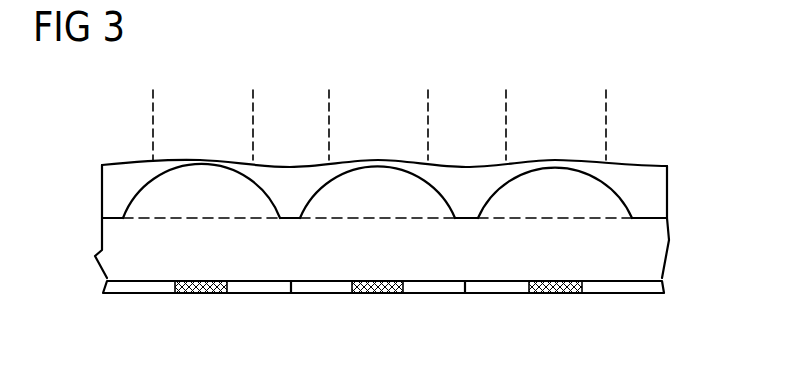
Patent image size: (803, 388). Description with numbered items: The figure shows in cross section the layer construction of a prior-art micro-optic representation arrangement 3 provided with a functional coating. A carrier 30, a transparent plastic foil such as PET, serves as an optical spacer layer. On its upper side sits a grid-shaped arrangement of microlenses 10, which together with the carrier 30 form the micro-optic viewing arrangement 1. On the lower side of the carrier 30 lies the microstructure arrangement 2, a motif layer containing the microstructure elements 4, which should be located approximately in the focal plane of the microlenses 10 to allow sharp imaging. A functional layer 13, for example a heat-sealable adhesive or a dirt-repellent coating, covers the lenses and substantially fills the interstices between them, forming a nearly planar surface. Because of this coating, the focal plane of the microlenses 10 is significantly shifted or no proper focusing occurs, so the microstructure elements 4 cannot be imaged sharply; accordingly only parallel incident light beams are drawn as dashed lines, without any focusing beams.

The micro-optic representation arrangement 3 is at (82, 118).
The micro-optic viewing arrangement 1 is at (69, 168).
The functional layer 13 is at (655, 182).
The microlenses 10 is at (555, 177).
The carrier 30 is at (655, 238).
The microstructure arrangement 2 is at (655, 285).
The microstructure elements 4 is at (210, 297).